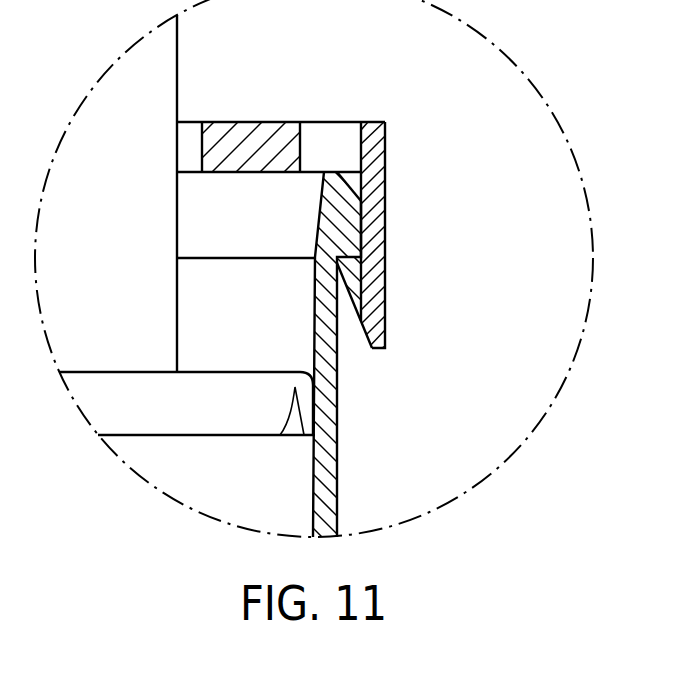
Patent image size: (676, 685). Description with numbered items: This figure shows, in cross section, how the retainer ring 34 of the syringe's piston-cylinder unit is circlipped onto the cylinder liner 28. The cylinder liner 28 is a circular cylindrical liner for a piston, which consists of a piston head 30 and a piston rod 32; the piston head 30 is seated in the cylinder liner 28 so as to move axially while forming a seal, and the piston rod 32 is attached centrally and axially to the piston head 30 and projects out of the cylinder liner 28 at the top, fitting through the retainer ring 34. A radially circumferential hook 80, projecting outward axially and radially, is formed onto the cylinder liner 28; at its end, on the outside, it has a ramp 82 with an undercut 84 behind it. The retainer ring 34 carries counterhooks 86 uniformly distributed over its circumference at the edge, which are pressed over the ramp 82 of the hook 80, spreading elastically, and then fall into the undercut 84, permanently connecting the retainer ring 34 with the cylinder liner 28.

The cylinder liner 28 is at (323, 505).
The piston head 30 is at (195, 393).
The piston rod 32 is at (153, 77).
The retainer ring 34 is at (258, 132).
The hook 80 is at (318, 233).
The ramp 82 is at (350, 185).
The undercut 84 is at (357, 298).
The counterhooks 86 is at (385, 318).